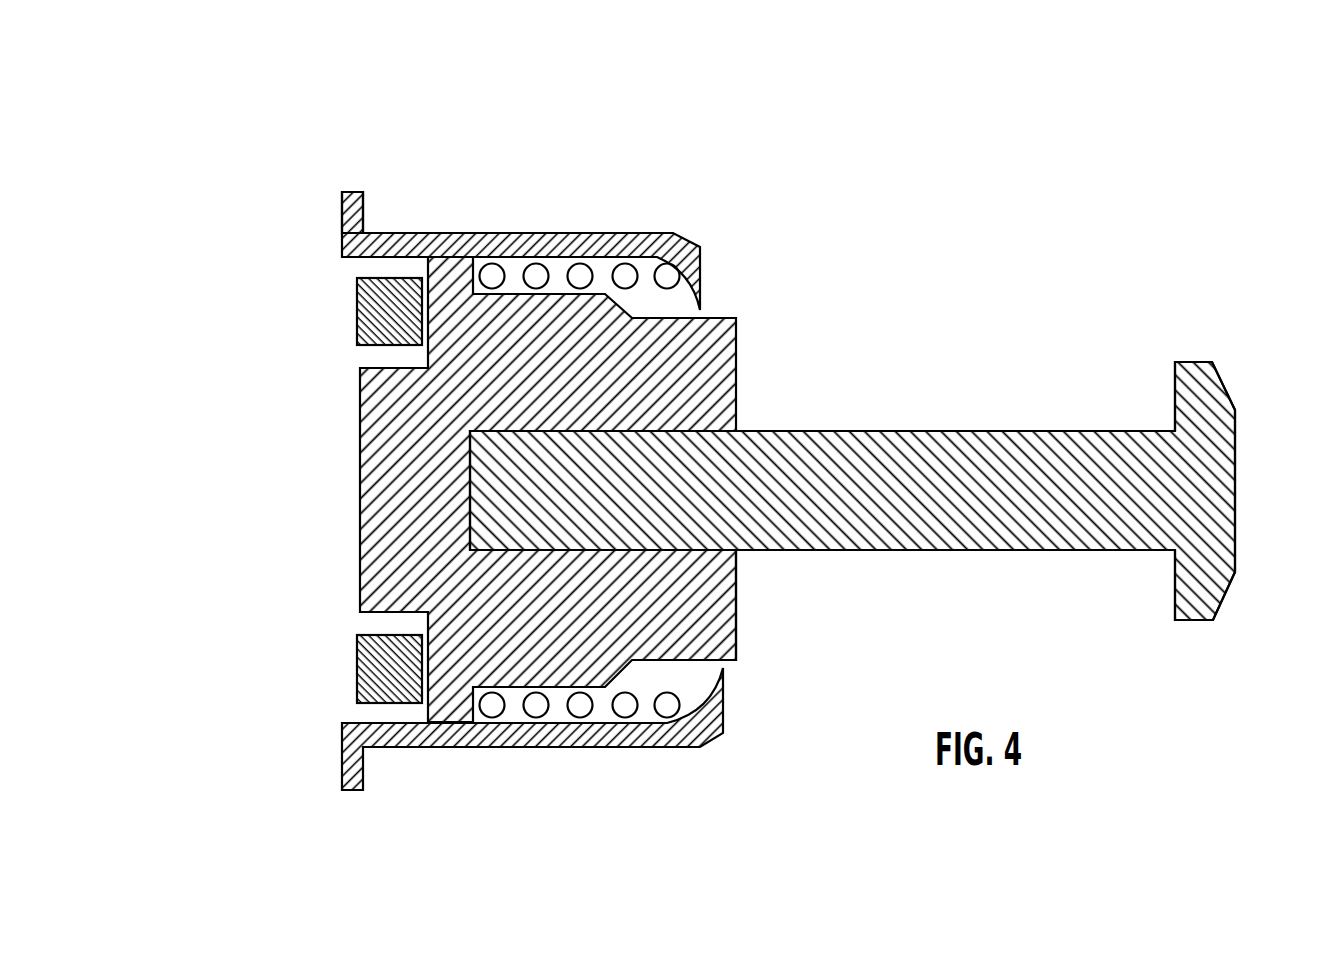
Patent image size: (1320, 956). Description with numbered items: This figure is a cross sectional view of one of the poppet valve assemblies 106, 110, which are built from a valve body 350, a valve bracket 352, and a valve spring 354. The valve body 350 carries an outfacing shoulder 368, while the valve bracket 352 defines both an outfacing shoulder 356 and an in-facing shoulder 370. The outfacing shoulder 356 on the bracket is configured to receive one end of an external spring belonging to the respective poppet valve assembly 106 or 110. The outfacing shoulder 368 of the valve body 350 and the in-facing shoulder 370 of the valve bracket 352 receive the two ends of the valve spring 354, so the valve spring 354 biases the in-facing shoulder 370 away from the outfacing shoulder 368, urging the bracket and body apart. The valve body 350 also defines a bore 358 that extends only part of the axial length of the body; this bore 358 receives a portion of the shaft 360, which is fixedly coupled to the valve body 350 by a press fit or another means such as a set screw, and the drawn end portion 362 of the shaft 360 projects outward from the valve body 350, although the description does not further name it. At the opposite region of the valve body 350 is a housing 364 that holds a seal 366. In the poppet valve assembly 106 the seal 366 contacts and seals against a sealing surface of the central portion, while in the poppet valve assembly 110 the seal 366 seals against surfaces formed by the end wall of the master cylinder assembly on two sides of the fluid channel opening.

The poppet valve assembly 106 is at (723, 424).
The poppet valve assembly 110 is at (258, 152).
The valve body 350 is at (736, 354).
The valve bracket 352 is at (482, 233).
The valve spring 354 is at (620, 287).
The outfacing shoulder 356 is at (365, 213).
The bore 358 is at (736, 555).
The shaft 360 is at (918, 431).
The shaft head 362 is at (1212, 378).
The housing 364 is at (363, 625).
The seal 366 is at (357, 320).
The outfacing shoulder 368 is at (487, 718).
The in-facing shoulder 370 is at (707, 692).